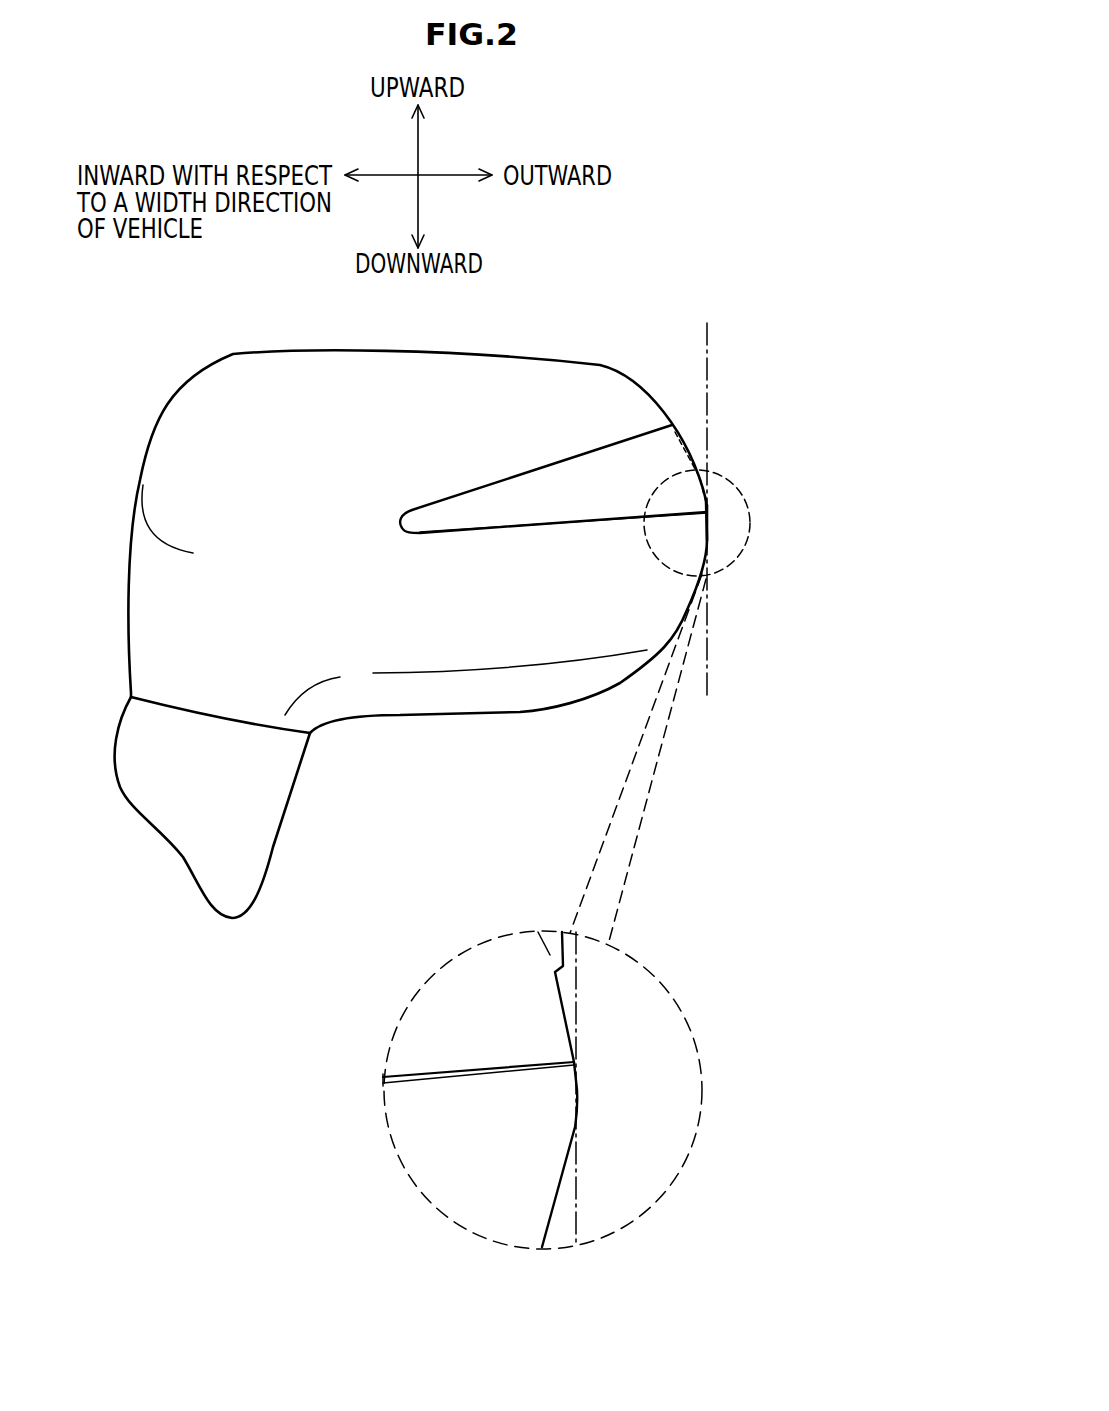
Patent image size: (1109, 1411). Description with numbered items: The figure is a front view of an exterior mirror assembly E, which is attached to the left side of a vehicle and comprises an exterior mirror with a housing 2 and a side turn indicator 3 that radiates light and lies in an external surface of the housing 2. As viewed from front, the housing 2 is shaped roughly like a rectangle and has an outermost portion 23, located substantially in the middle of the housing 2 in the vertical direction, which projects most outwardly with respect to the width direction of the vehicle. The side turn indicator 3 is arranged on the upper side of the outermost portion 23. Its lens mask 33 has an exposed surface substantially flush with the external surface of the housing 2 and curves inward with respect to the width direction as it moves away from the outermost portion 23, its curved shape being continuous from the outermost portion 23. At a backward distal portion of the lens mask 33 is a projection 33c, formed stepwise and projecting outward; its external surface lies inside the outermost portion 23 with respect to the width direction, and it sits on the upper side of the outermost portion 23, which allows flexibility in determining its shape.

The exterior mirror assembly E is at (175, 356).
The housing 2 is at (507, 363).
The side turn indicator 3 is at (610, 463).
The lens mask 33 is at (665, 465).
The projection 33c is at (688, 443).
The outermost portion 23 is at (707, 522).